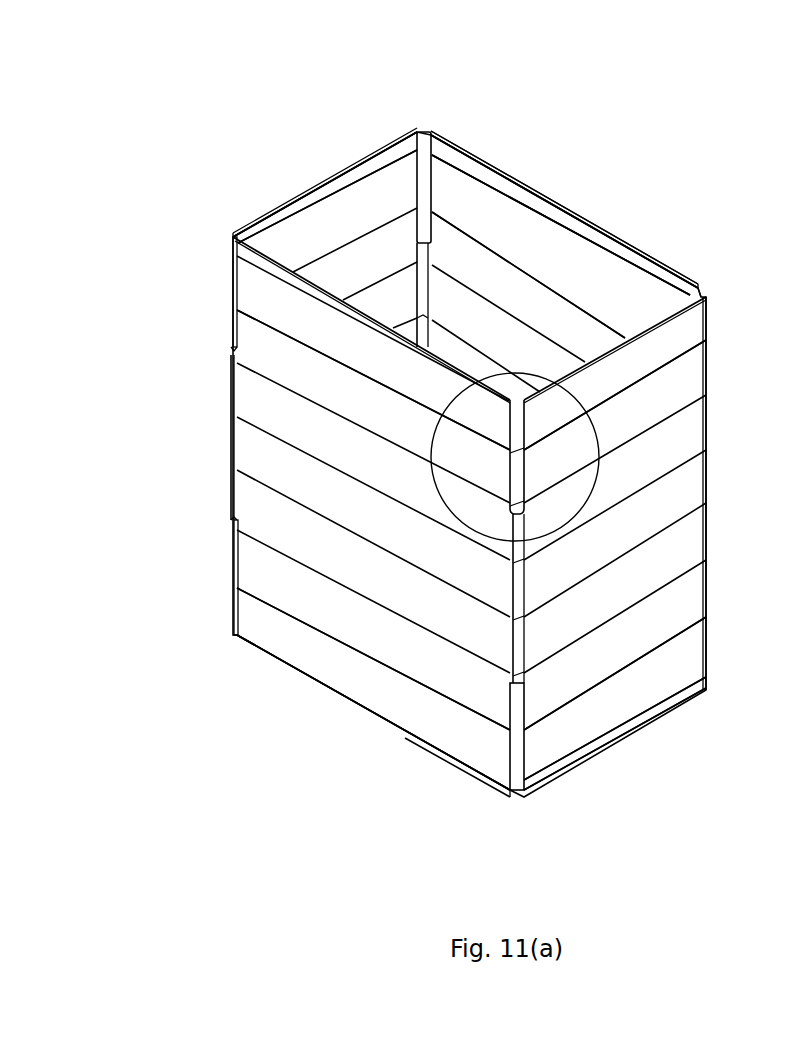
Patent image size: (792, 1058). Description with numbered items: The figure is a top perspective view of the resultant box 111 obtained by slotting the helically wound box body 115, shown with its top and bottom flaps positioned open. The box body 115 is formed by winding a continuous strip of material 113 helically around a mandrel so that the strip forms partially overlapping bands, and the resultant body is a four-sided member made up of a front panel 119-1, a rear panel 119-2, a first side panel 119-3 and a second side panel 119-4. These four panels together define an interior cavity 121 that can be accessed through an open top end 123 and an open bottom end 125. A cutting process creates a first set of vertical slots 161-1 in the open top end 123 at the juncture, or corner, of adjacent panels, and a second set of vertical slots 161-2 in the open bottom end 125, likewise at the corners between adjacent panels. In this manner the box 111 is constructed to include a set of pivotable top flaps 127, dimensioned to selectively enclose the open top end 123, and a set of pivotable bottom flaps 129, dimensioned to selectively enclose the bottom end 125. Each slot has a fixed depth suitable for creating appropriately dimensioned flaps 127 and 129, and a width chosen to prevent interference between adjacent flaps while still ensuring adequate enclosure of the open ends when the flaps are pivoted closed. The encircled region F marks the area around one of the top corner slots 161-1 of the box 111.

The box 111 is at (232, 788).
The continuous strip of material 113 is at (295, 648).
The box body 115 is at (232, 500).
The front panel 119-1 is at (262, 440).
The rear panel 119-2 is at (541, 355).
The first side panel 119-3 is at (600, 585).
The second side panel 119-4 is at (380, 306).
The interior cavity 121 is at (455, 248).
The open top end 123 is at (625, 240).
The open bottom end 125 is at (408, 738).
The pivotable top flaps 127 is at (378, 182).
The pivotable bottom flaps 129 is at (358, 670).
The first set of vertical slots 161-1 is at (418, 126).
The second set of vertical slots 161-2 is at (232, 602).
The detail region F is at (592, 476).